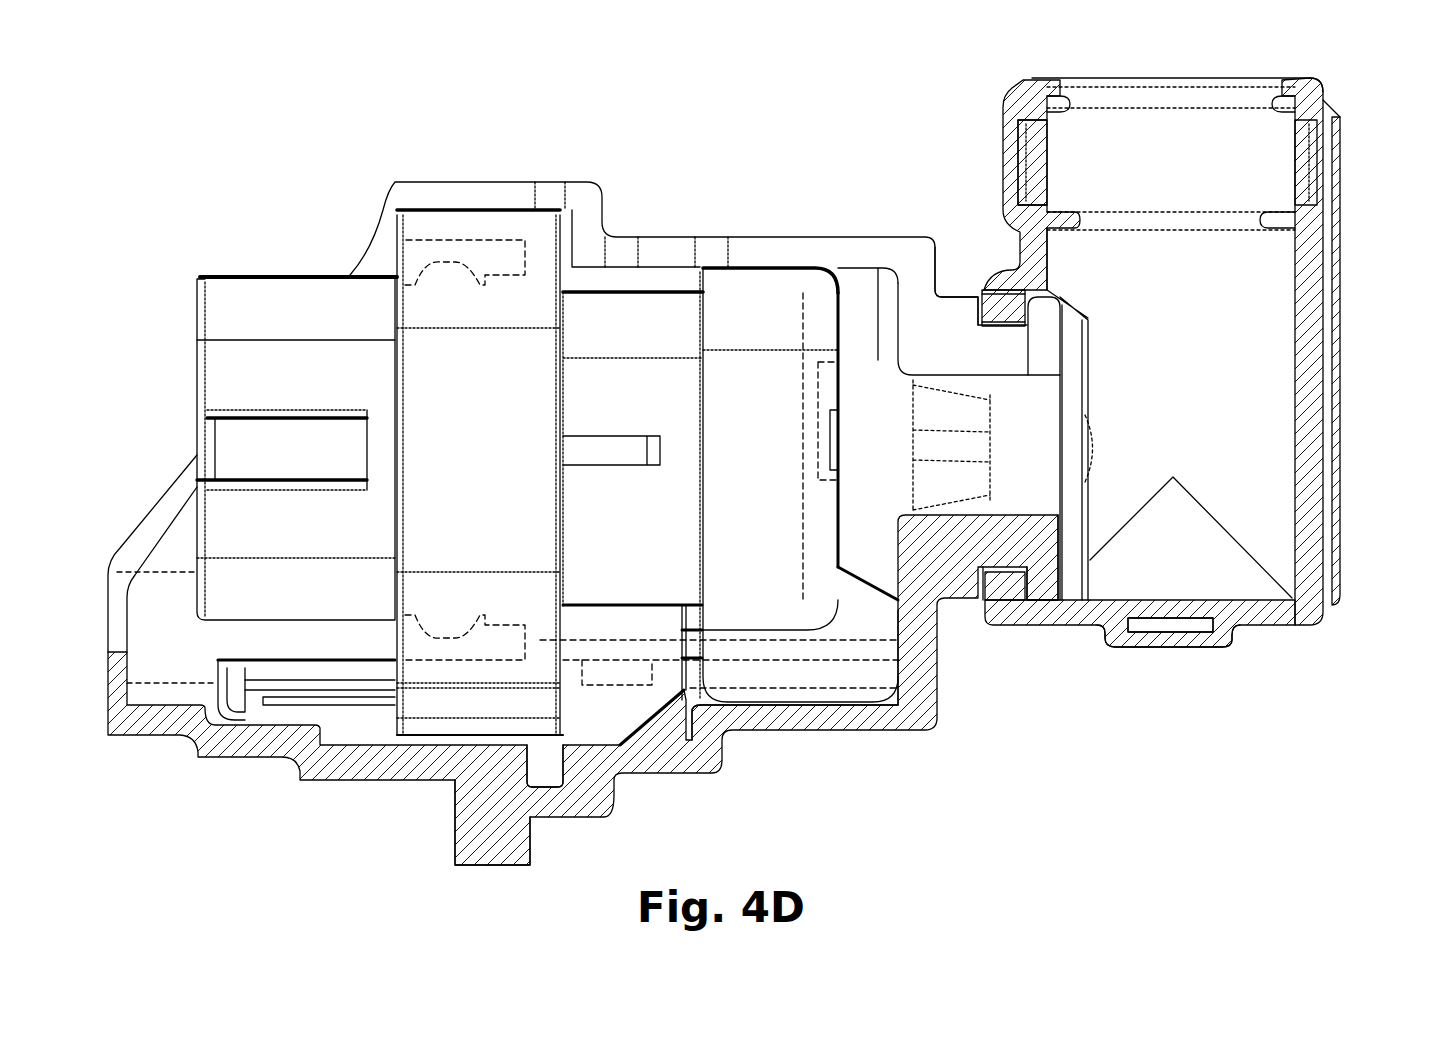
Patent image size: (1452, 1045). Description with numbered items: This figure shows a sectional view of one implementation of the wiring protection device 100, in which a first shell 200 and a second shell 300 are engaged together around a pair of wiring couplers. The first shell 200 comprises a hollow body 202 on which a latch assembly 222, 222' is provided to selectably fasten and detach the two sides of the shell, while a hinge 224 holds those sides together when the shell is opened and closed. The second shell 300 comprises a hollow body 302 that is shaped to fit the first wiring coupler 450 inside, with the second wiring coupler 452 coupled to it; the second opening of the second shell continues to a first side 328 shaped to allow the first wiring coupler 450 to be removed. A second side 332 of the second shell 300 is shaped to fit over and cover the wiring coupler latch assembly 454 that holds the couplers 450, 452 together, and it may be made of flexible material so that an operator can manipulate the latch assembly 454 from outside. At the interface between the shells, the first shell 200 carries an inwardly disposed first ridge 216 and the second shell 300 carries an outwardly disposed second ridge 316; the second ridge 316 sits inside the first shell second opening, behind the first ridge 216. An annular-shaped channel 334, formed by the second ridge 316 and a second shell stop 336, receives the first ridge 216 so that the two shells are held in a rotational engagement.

The wiring protection device 100 is at (205, 92).
The first shell 200 is at (1318, 42).
The hollow body 202 is at (1312, 100).
The first ridge 216 is at (1007, 310).
The latch assembly 222 is at (983, 166).
The latch assembly 222' is at (1191, 677).
The hinge 224 is at (1360, 305).
The second shell 300 is at (170, 790).
The hollow body 302 is at (465, 795).
The second ridge 316 is at (1046, 580).
The first side 328 is at (642, 170).
The second side 332 is at (487, 880).
The annular-shaped channel 334 is at (1040, 337).
The second shell stop 336 is at (965, 318).
The first wiring coupler 450 is at (750, 298).
The second wiring coupler 452 is at (200, 277).
The wiring coupler latch assembly 454 is at (585, 775).